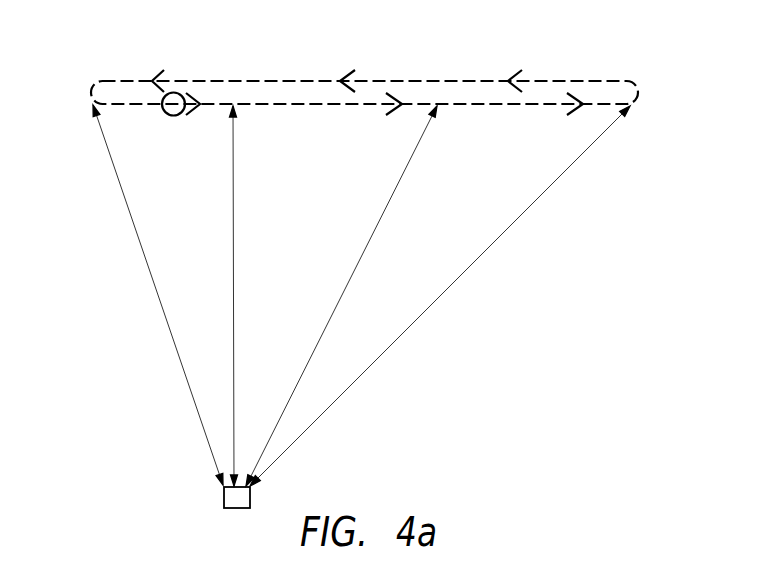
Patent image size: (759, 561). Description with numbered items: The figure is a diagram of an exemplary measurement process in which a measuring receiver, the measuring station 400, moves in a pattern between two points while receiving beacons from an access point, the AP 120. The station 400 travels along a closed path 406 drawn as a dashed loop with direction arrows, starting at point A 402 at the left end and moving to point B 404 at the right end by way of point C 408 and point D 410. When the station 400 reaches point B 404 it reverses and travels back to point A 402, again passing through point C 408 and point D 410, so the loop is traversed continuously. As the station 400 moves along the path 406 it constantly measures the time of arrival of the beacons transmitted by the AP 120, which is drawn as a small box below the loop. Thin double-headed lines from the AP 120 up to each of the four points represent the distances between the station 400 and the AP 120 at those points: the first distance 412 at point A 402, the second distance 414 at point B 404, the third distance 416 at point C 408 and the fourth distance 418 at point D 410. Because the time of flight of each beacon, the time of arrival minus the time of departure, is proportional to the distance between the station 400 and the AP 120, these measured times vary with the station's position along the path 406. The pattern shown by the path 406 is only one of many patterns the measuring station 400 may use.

The AP 120 is at (224, 498).
The measuring station 400 is at (176, 116).
The point A 402 is at (66, 91).
The point B 404 is at (652, 88).
The path 406 is at (132, 80).
The point C 408 is at (229, 80).
The point D 410 is at (437, 80).
The distance d1 412 is at (143, 247).
The distance d2 414 is at (496, 240).
The distance d3 416 is at (233, 237).
The distance d4 418 is at (363, 245).